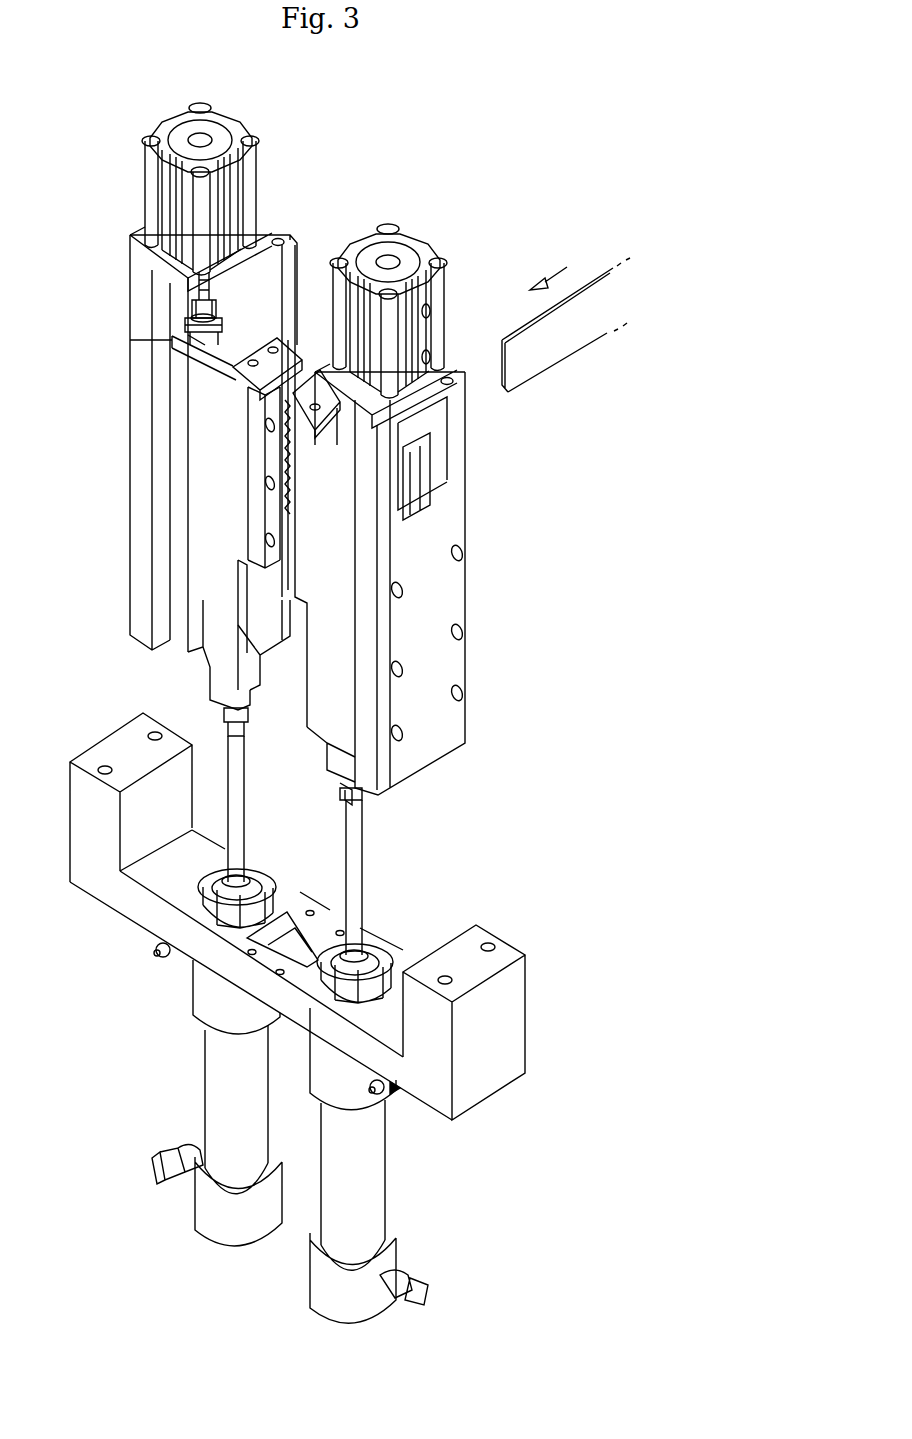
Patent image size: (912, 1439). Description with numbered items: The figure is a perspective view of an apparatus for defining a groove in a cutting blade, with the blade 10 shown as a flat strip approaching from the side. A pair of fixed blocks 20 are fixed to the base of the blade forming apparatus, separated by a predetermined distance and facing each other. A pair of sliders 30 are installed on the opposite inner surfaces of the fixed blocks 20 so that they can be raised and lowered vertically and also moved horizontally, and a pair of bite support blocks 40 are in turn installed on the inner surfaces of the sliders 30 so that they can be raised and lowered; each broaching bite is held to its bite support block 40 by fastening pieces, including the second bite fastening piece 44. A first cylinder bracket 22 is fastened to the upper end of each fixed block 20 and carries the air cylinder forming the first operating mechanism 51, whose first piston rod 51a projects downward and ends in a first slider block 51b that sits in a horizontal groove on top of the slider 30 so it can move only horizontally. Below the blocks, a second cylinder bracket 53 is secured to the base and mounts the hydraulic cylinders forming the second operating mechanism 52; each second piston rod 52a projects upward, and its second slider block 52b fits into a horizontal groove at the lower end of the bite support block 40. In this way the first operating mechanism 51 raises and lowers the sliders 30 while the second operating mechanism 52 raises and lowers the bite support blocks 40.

The plate workpiece 10 is at (565, 352).
The fixed block 20 is at (135, 489).
The first cylinder bracket 22 is at (132, 270).
The slider 30 is at (173, 574).
The bite support block 40 is at (203, 655).
The second bite fastening piece 44 is at (295, 350).
The first operating mechanism 51 is at (262, 185).
The first piston rod 51a is at (198, 322).
The first slider block 51b is at (200, 336).
The second operating mechanism 52 is at (215, 1100).
The second piston rod 52a is at (250, 822).
The second slider block 52b is at (250, 707).
The second cylinder bracket 53 is at (452, 948).